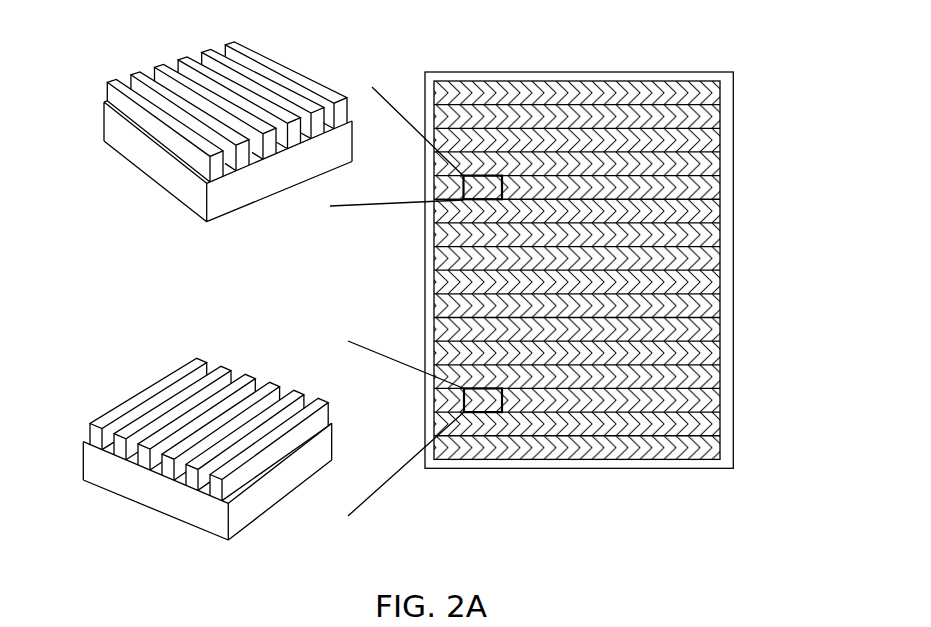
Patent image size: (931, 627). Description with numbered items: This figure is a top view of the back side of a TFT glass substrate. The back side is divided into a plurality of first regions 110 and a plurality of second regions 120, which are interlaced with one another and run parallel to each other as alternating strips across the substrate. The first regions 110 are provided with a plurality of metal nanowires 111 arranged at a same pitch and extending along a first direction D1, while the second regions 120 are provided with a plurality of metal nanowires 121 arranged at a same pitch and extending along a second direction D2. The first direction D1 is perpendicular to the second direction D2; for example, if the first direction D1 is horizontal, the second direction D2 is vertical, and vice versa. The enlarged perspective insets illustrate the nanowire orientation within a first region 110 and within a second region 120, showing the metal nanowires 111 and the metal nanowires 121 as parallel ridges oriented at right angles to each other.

The first regions 110 is at (688, 182).
The metal nanowires 111 is at (108, 78).
The second regions 120 is at (693, 401).
The metal nanowires 121 is at (187, 362).
The first direction D1 is at (108, 78).
The second direction D2 is at (213, 351).